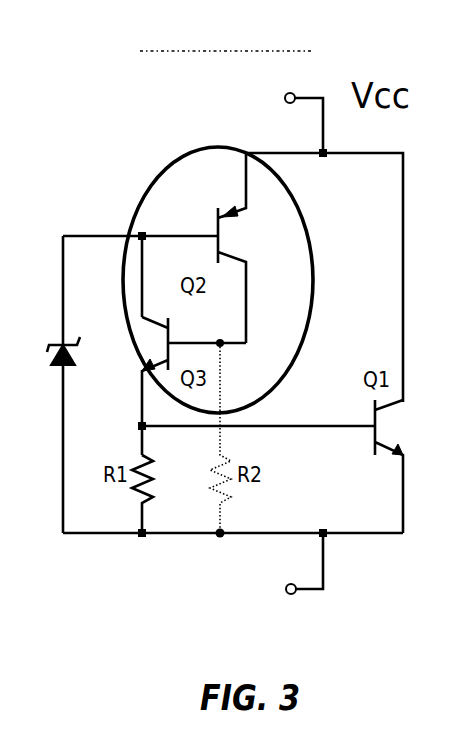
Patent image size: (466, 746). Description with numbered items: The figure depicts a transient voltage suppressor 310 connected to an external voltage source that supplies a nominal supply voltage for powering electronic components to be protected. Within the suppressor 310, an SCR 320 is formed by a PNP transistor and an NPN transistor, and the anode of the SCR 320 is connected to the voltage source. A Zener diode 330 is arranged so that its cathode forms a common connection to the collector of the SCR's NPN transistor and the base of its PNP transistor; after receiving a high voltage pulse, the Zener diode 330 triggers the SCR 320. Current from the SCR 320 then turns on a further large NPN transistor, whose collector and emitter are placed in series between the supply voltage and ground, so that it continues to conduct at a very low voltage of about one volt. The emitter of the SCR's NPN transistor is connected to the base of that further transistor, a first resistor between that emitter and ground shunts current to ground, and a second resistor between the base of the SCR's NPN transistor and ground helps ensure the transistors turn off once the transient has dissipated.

The transient voltage suppressor 310 is at (143, 51).
The SCR 320 is at (160, 168).
The Zener diode 330 is at (54, 362).